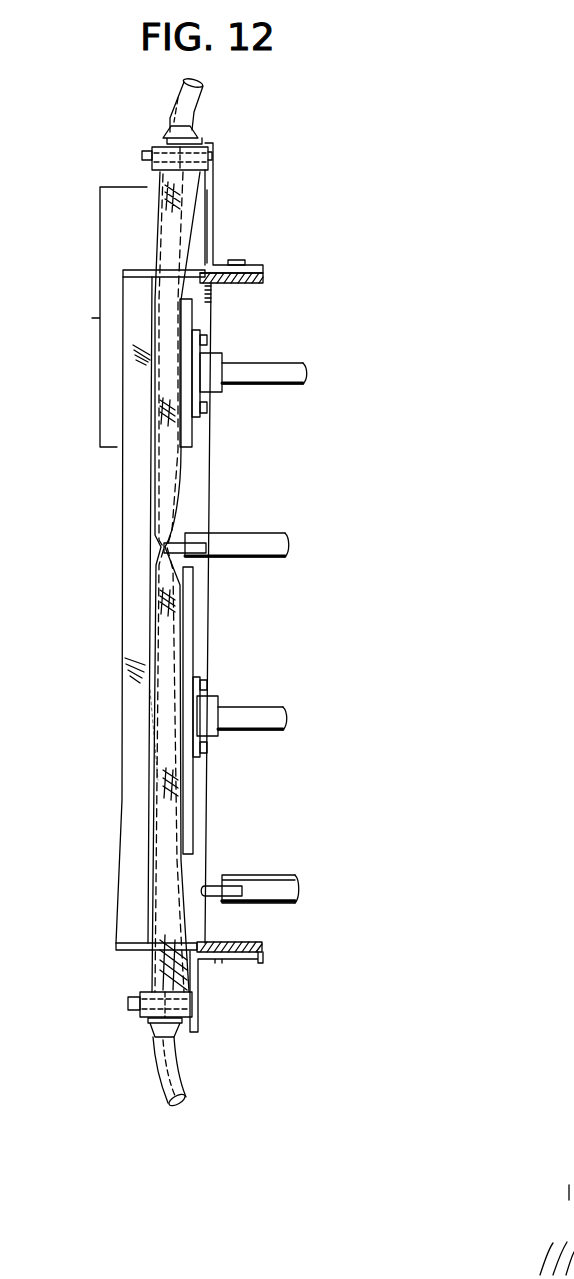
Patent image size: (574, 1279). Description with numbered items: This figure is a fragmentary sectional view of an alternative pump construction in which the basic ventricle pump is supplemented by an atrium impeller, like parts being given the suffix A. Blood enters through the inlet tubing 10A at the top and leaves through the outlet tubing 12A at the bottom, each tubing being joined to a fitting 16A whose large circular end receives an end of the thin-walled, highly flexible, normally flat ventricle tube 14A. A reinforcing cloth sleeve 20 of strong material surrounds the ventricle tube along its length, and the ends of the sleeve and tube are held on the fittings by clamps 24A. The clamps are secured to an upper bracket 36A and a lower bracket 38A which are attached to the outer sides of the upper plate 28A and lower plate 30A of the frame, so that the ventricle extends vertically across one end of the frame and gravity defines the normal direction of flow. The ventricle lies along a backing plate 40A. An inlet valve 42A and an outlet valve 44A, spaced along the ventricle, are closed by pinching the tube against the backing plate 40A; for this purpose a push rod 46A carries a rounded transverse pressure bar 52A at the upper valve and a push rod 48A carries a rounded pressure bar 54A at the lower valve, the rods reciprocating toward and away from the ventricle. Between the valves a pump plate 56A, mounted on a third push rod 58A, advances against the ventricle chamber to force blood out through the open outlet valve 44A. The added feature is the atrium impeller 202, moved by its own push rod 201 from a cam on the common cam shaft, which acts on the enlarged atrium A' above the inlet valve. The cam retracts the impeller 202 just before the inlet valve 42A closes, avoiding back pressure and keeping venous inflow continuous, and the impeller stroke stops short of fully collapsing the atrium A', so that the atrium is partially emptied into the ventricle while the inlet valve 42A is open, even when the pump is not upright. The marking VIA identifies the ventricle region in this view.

The tubing 10A is at (190, 117).
The tubing 12A is at (170, 1072).
The ventricle tube 14A is at (185, 228).
The fitting 16A is at (198, 138).
The cloth sleeve 20 is at (195, 262).
The clamp 24A is at (165, 160).
The upper plate 28A is at (258, 282).
The lower plate 30A is at (260, 947).
The bracket 36A is at (207, 182).
The bracket 38A is at (192, 990).
The backing plate 40A is at (150, 518).
The inlet valve 42A is at (195, 522).
The valve 44A is at (183, 902).
The push rod 46A is at (255, 540).
The push rod 48A is at (268, 884).
The pressure bar 52A is at (212, 558).
The pressure bar 54A is at (208, 887).
The pump plate 56A is at (183, 660).
The push rod 58A is at (232, 712).
The push rod 201 is at (250, 372).
The atrium impeller 202 is at (184, 328).
The atrium A' is at (94, 317).
The view VIA is at (155, 731).